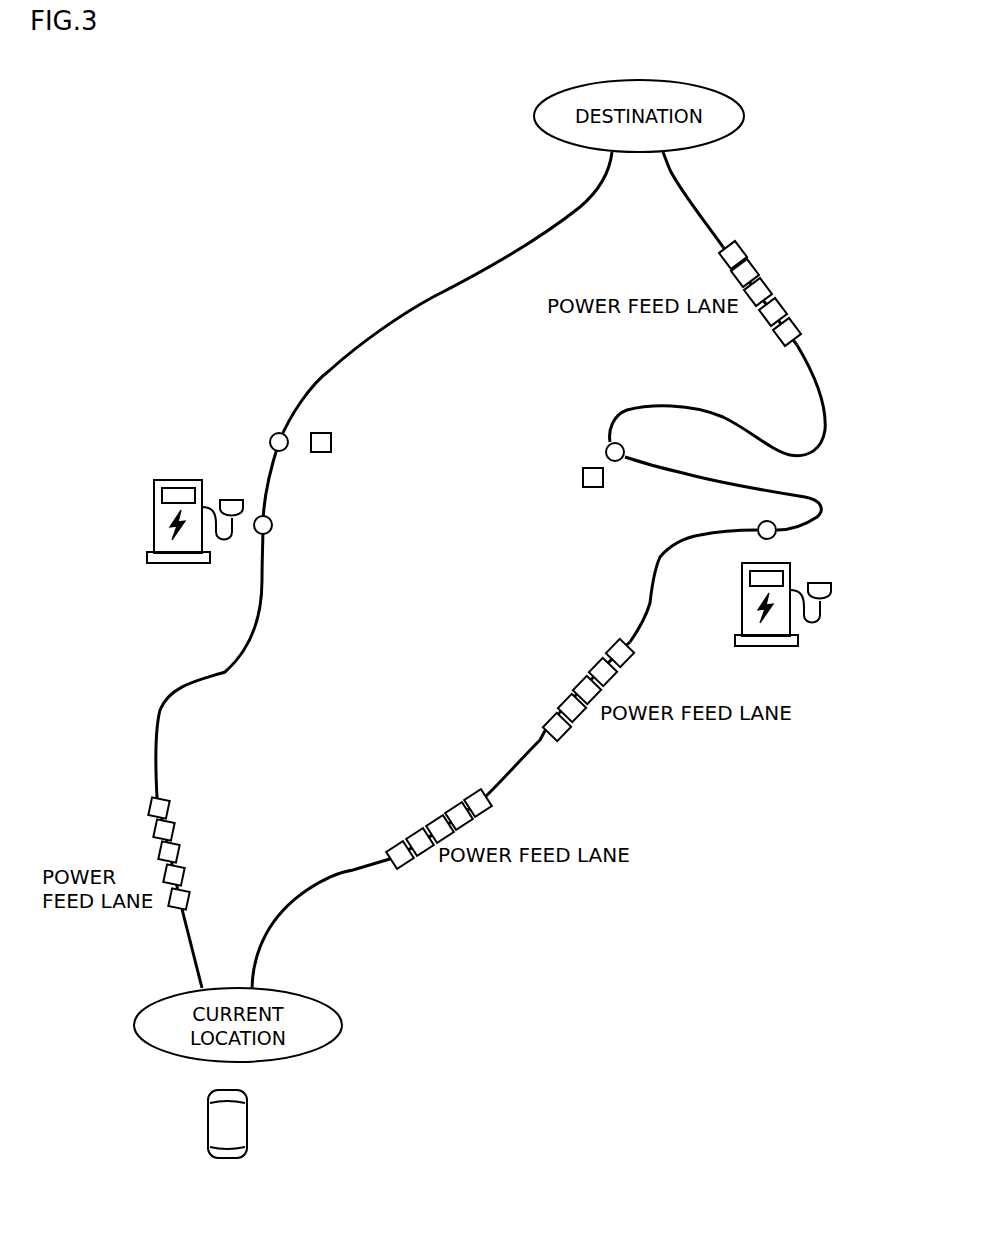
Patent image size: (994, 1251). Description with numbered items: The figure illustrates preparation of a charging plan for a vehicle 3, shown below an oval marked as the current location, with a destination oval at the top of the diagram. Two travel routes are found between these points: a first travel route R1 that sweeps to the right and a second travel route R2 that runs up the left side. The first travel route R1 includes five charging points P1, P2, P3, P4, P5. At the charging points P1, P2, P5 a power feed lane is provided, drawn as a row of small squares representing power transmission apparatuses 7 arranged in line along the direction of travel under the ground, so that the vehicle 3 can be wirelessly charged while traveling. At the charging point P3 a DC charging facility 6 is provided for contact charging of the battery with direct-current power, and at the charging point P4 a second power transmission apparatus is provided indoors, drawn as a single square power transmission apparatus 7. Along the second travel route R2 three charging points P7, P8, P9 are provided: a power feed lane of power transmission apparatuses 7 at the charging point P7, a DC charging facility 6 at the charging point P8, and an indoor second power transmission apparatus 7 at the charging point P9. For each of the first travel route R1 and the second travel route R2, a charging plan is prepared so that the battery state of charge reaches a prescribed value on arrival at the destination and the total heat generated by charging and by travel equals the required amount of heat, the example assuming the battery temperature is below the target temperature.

The vehicle 3 is at (218, 1090).
The DC charging facility 6 is at (192, 478).
The power transmission apparatus 7 is at (767, 290).
The charging point P1 is at (538, 815).
The charging point P2 is at (530, 708).
The charging point P3 is at (762, 522).
The charging point P4 is at (607, 447).
The charging point P5 is at (789, 247).
The charging point P7 is at (216, 799).
The charging point P8 is at (270, 518).
The charging point P9 is at (277, 432).
The first travel route R1 is at (327, 888).
The second travel route R2 is at (197, 967).